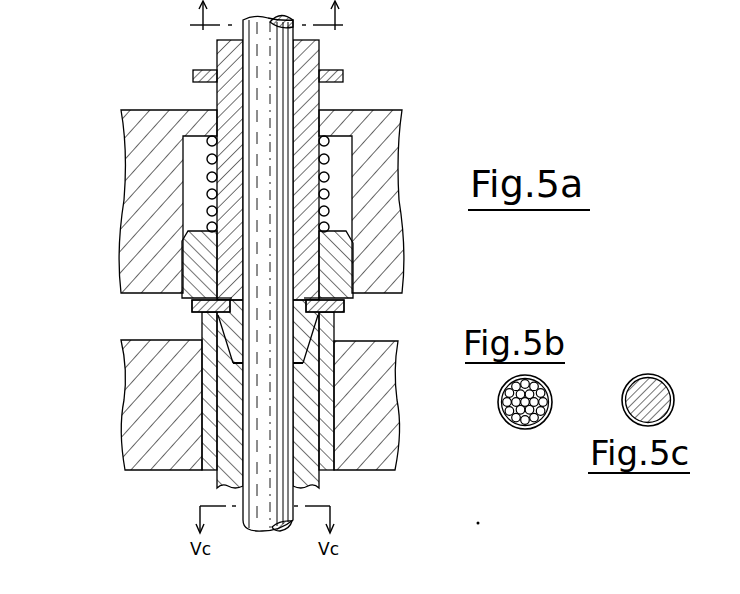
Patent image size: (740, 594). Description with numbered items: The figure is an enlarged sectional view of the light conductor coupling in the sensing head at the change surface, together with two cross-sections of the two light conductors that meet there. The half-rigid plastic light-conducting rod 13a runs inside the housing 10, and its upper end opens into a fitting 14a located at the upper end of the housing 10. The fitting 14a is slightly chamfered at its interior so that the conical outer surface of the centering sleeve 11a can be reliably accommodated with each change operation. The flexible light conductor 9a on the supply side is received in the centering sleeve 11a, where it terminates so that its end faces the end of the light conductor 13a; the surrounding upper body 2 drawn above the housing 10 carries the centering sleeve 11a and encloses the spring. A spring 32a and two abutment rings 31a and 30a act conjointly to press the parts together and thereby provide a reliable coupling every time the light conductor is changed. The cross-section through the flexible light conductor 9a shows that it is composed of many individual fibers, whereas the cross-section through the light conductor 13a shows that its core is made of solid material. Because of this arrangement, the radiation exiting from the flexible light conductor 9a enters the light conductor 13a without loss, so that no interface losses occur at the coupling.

The upper housing 2 is at (387, 128).
The flexible light conductor 9a is at (272, 107).
The abutment ring 31a is at (193, 76).
The spring 32a is at (208, 190).
The centering sleeve 11a is at (190, 255).
The abutment ring 30a is at (192, 310).
The housing 10 is at (121, 418).
The fitting 14a is at (202, 468).
The light conductor 13a is at (257, 516).